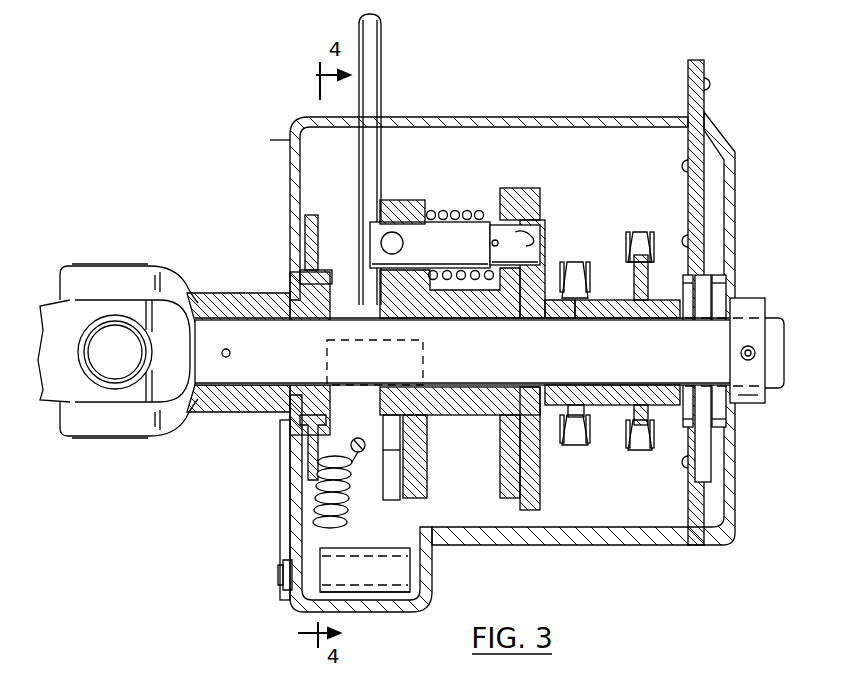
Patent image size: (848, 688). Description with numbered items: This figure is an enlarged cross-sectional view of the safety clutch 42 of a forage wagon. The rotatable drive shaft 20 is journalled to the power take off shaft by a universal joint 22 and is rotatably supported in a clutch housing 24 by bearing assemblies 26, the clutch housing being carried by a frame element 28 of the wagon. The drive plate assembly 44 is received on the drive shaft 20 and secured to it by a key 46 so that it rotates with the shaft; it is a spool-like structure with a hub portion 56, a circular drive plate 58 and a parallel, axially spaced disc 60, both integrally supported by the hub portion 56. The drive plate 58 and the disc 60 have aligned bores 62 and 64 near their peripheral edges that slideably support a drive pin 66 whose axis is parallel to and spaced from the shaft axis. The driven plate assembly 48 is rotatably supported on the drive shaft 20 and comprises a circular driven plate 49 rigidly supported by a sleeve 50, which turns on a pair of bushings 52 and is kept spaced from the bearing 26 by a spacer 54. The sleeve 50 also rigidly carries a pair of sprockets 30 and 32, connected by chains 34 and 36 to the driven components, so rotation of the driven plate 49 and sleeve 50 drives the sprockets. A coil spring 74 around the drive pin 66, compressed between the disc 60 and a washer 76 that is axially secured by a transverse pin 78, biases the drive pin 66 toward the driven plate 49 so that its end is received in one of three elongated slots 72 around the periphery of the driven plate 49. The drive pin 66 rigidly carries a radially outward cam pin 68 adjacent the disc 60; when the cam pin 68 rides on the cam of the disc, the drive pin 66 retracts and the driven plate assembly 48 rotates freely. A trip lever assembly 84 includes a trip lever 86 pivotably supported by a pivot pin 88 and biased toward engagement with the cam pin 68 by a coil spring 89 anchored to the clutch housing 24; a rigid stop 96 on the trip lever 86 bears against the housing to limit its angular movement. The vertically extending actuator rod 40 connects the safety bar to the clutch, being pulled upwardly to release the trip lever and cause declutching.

The drive shaft 20 is at (467, 354).
The universal joint 22 is at (100, 368).
The clutch housing 24 is at (290, 135).
The bearing assemblies 26 is at (290, 288).
The frame element 28 is at (706, 546).
The sprocket 30 is at (568, 437).
The sprocket 32 is at (641, 232).
The chain 34 is at (590, 440).
The chain 36 is at (651, 240).
The actuator rod 40 is at (381, 45).
The safety clutch 42 is at (540, 493).
The drive plate assembly 44 is at (452, 416).
The key 46 is at (458, 382).
The driven plate assembly 48 is at (522, 192).
The driven plate 49 is at (527, 194).
The sleeve 50 is at (598, 300).
The bushings 52 is at (578, 318).
The spacer 54 is at (672, 300).
The hub portion 56 is at (490, 416).
The drive plate 58 is at (505, 500).
The disc 60 is at (427, 496).
The bore 62 is at (522, 240).
The bore 64 is at (418, 205).
The drive pin 66 is at (372, 232).
The cam pin 68 is at (382, 245).
The slots 72 is at (537, 230).
The coil spring 74 is at (442, 212).
The washer 76 is at (487, 222).
The transverse pin 78 is at (500, 245).
The trip lever assembly 84 is at (312, 440).
The trip lever 86 is at (404, 533).
The pivot pin 88 is at (280, 576).
The coil spring 89 is at (325, 490).
The stop 96 is at (382, 420).